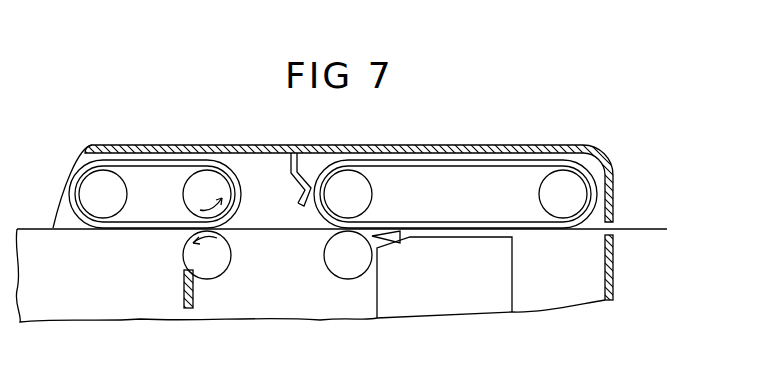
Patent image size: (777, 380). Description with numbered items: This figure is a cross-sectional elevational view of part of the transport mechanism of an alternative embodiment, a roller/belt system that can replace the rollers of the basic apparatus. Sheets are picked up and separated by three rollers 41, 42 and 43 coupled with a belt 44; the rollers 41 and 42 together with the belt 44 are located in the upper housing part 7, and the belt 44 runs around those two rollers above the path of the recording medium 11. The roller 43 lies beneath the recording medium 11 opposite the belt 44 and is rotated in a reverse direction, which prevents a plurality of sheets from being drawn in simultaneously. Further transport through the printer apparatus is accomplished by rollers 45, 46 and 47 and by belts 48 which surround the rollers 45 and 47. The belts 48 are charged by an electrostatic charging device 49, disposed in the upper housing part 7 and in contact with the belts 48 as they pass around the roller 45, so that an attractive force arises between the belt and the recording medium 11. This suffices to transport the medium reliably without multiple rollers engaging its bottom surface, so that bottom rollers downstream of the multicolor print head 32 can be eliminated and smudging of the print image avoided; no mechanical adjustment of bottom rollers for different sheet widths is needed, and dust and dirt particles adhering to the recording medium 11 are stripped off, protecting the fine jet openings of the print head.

The upper housing part 7 is at (137, 149).
The recording medium 11 is at (646, 228).
The multicolor print head 32 is at (448, 297).
The roller 41 is at (92, 192).
The roller 42 is at (208, 176).
The roller 43 is at (210, 268).
The belt 44 is at (170, 163).
The roller 45 is at (344, 184).
The roller 46 is at (347, 268).
The roller 47 is at (577, 195).
The belts 48 is at (466, 162).
The electrostatic charging device 49 is at (290, 164).